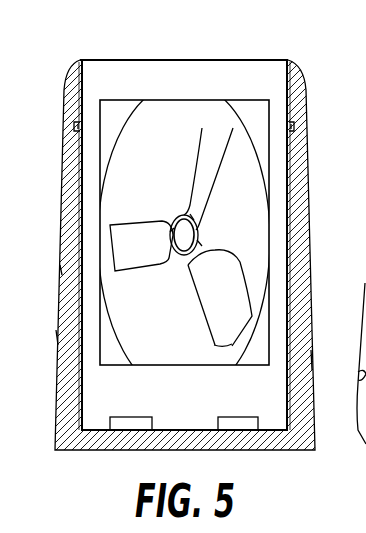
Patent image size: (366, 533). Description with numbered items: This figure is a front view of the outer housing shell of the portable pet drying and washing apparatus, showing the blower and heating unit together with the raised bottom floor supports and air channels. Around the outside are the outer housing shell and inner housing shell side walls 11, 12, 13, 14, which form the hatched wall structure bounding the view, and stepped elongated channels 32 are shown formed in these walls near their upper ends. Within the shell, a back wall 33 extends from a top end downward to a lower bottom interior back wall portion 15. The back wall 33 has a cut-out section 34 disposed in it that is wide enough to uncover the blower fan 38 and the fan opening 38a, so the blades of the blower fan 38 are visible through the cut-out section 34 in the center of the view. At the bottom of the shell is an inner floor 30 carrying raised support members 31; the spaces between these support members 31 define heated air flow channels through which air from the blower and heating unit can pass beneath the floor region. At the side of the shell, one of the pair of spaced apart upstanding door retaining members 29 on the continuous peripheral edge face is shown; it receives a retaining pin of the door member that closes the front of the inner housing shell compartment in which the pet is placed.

The side wall 11 is at (310, 232).
The side wall 12 is at (305, 358).
The side wall 13 is at (60, 268).
The side wall 14 is at (80, 335).
The lower bottom interior back wall portion 15 is at (188, 402).
The door retaining member 29 is at (362, 376).
The inner floor 30 is at (271, 428).
The raised support member 31 is at (118, 415).
The stepped elongated channel 32 is at (76, 150).
The back wall 33 is at (200, 62).
The cut-out section 34 is at (255, 123).
The blower fan 38 is at (148, 237).
The fan opening 38a is at (151, 122).